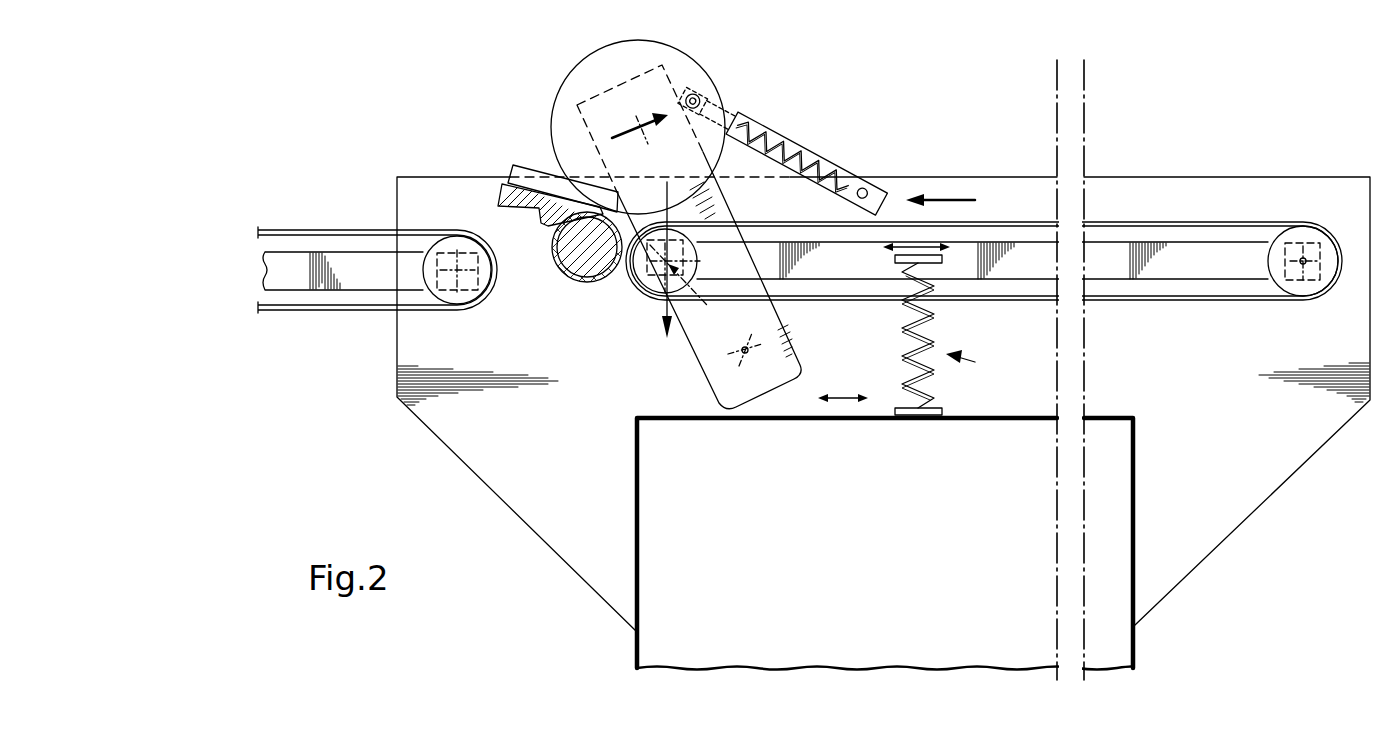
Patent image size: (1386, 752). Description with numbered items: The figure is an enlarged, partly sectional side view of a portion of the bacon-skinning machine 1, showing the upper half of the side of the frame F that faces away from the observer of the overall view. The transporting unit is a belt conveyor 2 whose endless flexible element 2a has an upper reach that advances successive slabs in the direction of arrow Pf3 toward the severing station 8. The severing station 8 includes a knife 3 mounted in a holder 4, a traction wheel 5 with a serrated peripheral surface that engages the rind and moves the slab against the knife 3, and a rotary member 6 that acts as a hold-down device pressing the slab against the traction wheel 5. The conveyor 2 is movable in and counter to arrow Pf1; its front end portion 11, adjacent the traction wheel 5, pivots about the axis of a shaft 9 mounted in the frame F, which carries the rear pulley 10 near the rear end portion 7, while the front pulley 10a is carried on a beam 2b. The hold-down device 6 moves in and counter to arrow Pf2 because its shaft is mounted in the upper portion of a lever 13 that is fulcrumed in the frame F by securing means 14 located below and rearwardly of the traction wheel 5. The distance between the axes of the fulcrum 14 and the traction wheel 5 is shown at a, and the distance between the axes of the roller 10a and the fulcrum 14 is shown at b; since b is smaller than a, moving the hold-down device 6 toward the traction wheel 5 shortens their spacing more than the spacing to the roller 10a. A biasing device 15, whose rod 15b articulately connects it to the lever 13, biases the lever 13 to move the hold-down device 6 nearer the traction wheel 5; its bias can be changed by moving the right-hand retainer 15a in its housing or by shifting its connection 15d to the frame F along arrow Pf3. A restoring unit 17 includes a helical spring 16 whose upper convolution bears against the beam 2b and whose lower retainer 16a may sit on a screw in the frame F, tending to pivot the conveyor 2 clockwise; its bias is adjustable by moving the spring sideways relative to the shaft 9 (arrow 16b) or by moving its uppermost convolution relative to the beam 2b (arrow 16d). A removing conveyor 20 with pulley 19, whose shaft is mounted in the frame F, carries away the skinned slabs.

The machine 1 is at (946, 108).
The belt conveyor 2 is at (998, 220).
The endless flexible element 2a is at (1104, 224).
The beam 2b is at (1203, 270).
The knife 3 is at (563, 178).
The holder 4 is at (534, 238).
The traction wheel 5 is at (577, 275).
The rotary member (hold-down device) 6 is at (668, 55).
The rear end portion 7 is at (1314, 160).
The severing station 8 is at (742, 212).
The shaft 9 is at (1300, 264).
The rear pulley 10 is at (1320, 298).
The front pulley (reversing roller) 10a is at (686, 262).
The front end portion 11 is at (624, 300).
The lever 13 is at (578, 100).
The securing means (fulcrum) 14 is at (739, 362).
The biasing device 15 is at (828, 158).
The right-hand retainer 15a is at (866, 190).
The rod 15b is at (736, 112).
The connection 15d is at (890, 177).
The helical spring 16 is at (934, 338).
The retainer 16a is at (930, 417).
The arrow 16b is at (848, 382).
The arrow 16d is at (915, 245).
The restoring unit 17 is at (977, 364).
The pulley 19 is at (466, 298).
The removing conveyor 20 is at (345, 218).
The frame F is at (550, 573).
The distance a is at (668, 298).
The distance b is at (736, 343).
The arrow Pf1 is at (665, 300).
The arrow Pf2 is at (640, 114).
The arrow Pf3 is at (942, 197).